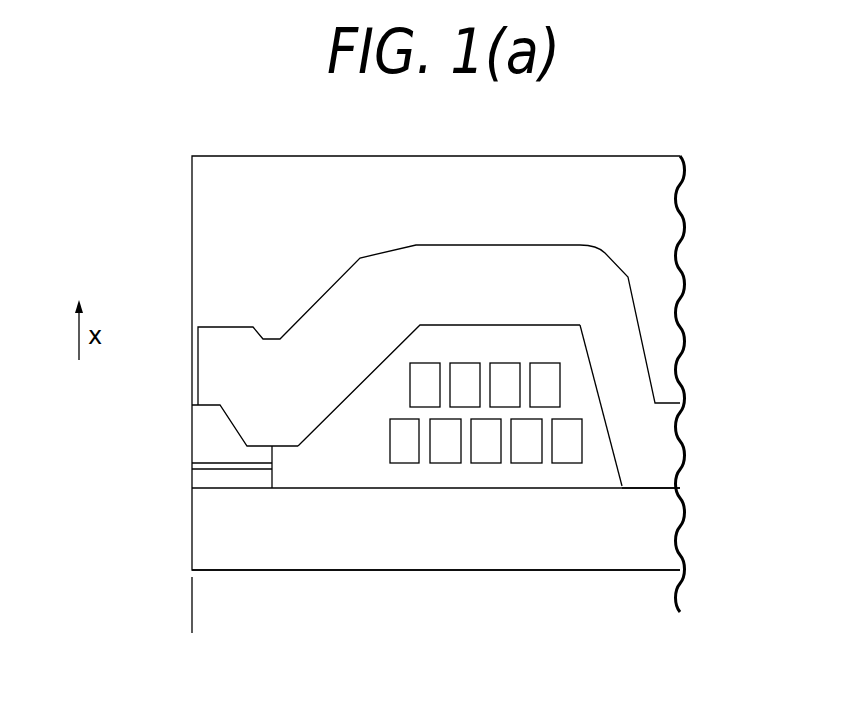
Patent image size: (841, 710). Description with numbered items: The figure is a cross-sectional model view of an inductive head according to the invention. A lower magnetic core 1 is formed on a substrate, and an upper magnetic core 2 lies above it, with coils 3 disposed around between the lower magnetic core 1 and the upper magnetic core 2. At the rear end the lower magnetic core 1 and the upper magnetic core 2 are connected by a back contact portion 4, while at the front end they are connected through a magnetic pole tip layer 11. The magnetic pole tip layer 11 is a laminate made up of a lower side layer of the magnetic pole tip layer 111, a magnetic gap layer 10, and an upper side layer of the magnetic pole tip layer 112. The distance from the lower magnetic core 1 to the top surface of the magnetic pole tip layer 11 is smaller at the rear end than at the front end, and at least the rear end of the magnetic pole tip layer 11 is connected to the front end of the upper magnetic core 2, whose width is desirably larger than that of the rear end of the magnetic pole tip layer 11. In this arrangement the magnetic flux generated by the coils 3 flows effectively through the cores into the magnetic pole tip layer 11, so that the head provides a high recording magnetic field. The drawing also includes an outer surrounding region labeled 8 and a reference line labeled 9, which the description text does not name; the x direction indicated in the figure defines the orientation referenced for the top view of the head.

The lower magnetic core 1 is at (465, 558).
The upper magnetic core 2 is at (450, 258).
The coils 3 is at (407, 354).
The back contact portion 4 is at (637, 488).
The protective overcoat layer 8 is at (203, 245).
The air bearing surface 9 is at (193, 600).
The magnetic gap layer 10 is at (193, 468).
The magnetic pole tip layer 11 is at (98, 503).
The lower side layer of the magnetic pole tip layer 111 is at (193, 482).
The upper side layer of the magnetic pole tip layer 112 is at (203, 438).